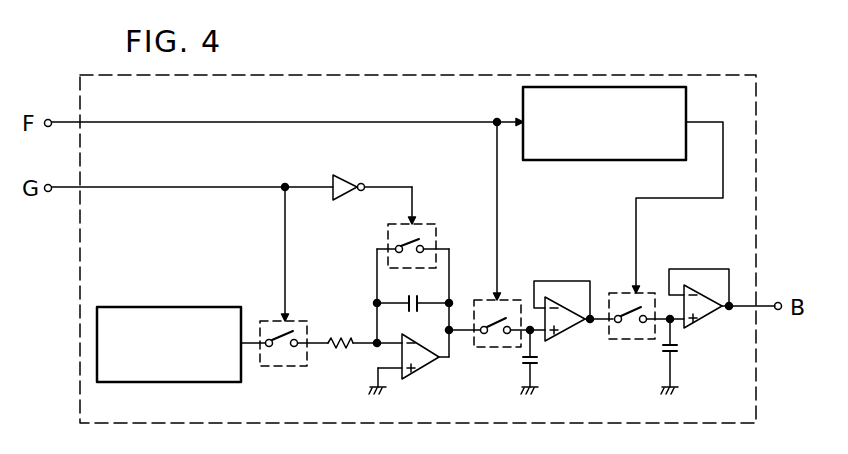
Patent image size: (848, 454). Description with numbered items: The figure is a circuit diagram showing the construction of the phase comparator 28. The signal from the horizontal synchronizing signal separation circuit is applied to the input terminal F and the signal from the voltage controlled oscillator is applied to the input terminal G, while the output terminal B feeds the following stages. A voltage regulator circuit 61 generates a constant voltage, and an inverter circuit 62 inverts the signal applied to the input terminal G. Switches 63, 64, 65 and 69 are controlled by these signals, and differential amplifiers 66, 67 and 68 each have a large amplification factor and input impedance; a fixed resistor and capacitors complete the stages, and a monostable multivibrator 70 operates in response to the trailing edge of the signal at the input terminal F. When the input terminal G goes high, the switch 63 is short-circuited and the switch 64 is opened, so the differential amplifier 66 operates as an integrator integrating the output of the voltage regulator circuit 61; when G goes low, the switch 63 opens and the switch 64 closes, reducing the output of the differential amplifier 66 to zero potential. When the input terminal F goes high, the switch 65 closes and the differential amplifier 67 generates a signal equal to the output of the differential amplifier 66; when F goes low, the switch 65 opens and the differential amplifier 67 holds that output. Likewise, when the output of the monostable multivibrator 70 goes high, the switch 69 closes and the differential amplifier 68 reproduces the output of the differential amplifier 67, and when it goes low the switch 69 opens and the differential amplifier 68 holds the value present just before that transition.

The phase comparator 28 is at (756, 412).
The voltage regulator circuit 61 is at (152, 383).
The inverter circuit 62 is at (334, 176).
The switch 63 is at (302, 375).
The switch 64 is at (418, 224).
The switch 65 is at (511, 298).
The differential amplifier 66 is at (425, 372).
The differential amplifier 67 is at (575, 330).
The differential amplifier 68 is at (699, 318).
The switch 69 is at (614, 293).
The monostable multivibrator 70 is at (594, 161).